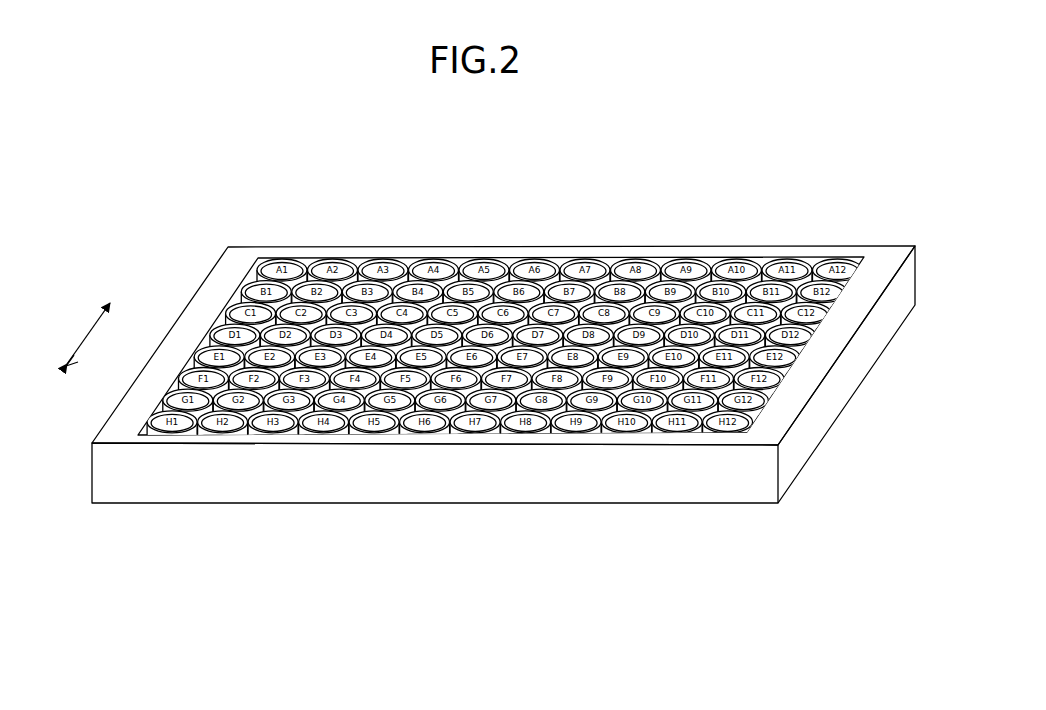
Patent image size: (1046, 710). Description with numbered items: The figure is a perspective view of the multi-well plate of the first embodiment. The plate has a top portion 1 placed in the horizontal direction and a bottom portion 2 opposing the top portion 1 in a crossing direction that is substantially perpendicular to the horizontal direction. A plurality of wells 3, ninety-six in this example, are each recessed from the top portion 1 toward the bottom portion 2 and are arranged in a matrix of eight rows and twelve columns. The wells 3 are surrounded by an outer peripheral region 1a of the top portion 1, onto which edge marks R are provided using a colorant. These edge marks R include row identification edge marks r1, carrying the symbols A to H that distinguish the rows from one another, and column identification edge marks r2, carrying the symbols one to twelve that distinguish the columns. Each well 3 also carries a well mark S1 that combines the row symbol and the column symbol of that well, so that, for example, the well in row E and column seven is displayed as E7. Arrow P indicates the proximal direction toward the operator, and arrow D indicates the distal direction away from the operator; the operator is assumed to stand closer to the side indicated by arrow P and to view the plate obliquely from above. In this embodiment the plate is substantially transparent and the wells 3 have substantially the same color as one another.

The top portion 1 is at (503, 382).
The outer peripheral region 1a is at (190, 326).
The bottom portion 2 is at (587, 504).
The well 3 is at (598, 240).
The well mark S1 is at (571, 268).
The edge marks R is at (482, 268).
The row identification edge marks r1 is at (235, 263).
The column identification edge marks r2 is at (561, 211).
The arrow D is at (98, 316).
The arrow P is at (61, 377).